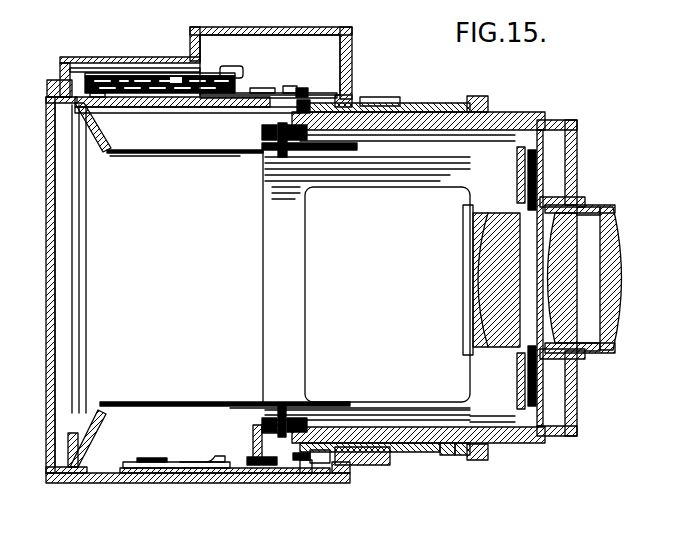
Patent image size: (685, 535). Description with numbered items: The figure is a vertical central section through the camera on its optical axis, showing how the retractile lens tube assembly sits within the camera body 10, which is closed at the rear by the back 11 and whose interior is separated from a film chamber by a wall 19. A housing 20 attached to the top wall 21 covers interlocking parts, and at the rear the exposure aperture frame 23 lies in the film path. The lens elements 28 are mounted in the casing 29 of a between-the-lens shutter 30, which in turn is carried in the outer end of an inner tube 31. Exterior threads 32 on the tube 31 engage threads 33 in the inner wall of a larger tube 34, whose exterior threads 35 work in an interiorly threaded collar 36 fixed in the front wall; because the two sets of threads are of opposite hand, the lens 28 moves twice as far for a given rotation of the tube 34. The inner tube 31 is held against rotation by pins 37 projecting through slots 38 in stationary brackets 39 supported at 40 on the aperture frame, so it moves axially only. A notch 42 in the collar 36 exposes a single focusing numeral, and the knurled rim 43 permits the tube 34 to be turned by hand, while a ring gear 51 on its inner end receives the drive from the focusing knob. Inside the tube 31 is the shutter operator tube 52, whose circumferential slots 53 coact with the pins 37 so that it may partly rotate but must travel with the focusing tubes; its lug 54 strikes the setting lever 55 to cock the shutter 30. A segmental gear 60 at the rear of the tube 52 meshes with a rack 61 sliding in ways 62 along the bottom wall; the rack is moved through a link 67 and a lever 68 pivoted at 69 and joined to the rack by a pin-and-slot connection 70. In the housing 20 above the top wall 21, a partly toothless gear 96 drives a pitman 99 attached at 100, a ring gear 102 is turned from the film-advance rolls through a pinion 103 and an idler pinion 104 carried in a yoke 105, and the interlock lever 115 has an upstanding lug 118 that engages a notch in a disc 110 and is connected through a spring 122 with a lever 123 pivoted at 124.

The camera body 10 is at (118, 485).
The back 11 is at (47, 370).
The wall 19 is at (188, 231).
The housing 20 is at (352, 32).
The top wall 21 is at (167, 107).
The exposure aperture frame 23 is at (86, 270).
The lens elements 28 is at (567, 283).
The shutter casing 29 is at (577, 165).
The between-the-lens shutter 30 is at (523, 453).
The inner tube 31 is at (513, 120).
The exterior threads of inner tube 32 is at (543, 123).
The inner threads of larger tube 33 is at (452, 460).
The larger tube 34 is at (445, 456).
The exterior threads of larger tube 35 is at (430, 452).
The threaded collar 36 is at (380, 465).
The pins 37 is at (263, 163).
The slots 38 is at (177, 153).
The stationary brackets 39 is at (147, 139).
The bracket support 40 is at (72, 130).
The notch 42 is at (372, 97).
The knurled rim 43 is at (477, 97).
The ring gear 51 is at (308, 475).
The shutter operator 52 is at (395, 178).
The circumferential slots 53 is at (270, 126).
The lug 54 is at (527, 125).
The setting lever 55 is at (532, 125).
The segmental gear 60 is at (253, 443).
The rack 61 is at (230, 474).
The ways 62 is at (322, 475).
The link 67 is at (220, 455).
The lever 68 is at (167, 458).
The pivot 69 is at (147, 462).
The pin-and-slot connection 70 is at (262, 466).
The gear 96 is at (100, 103).
The pitman 99 is at (187, 63).
The pitman attachment 100 is at (160, 76).
The ring gear 102 is at (125, 73).
The pinion 103 is at (74, 58).
The idler pinion 104 is at (88, 72).
The yoke 105 is at (108, 73).
The disc 110 is at (175, 77).
The interlock lever 115 is at (200, 113).
The upstanding lug 118 is at (238, 67).
The spring 122 is at (300, 88).
The lever 123 is at (288, 86).
The pivot 124 is at (272, 88).